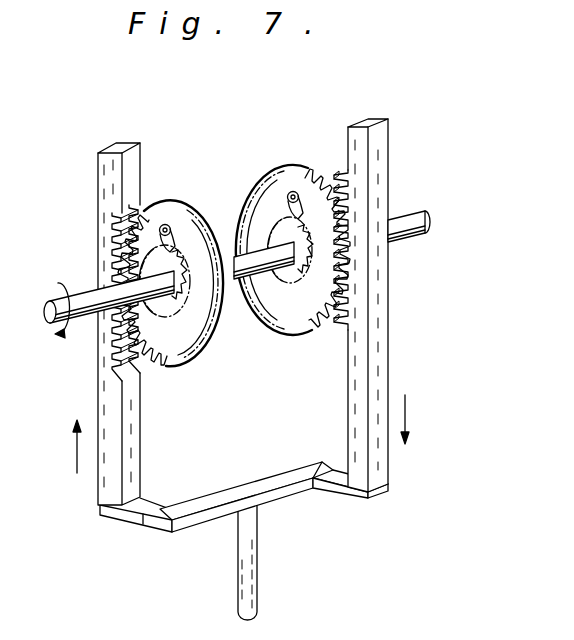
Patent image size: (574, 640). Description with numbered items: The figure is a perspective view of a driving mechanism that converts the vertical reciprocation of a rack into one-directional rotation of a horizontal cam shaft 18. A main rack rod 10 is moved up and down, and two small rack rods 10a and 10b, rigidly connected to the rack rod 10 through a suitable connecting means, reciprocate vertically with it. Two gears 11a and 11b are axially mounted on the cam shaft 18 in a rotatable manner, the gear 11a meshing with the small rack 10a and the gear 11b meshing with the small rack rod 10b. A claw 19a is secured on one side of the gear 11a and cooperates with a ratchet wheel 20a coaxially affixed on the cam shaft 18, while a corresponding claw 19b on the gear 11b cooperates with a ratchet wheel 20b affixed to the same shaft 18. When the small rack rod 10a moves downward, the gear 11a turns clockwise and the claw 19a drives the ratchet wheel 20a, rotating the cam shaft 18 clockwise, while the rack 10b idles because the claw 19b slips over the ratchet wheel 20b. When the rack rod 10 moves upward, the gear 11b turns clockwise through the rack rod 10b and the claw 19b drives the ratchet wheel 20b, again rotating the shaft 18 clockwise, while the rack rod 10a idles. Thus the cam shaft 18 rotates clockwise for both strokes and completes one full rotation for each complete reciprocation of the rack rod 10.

The rack rod 10 is at (258, 557).
The small rack rod 10a is at (375, 125).
The small rack rod 10b is at (121, 150).
The gear 11a is at (322, 322).
The gear 11b is at (211, 356).
The cam shaft 18 is at (261, 284).
The claw 19a is at (294, 191).
The claw 19b is at (169, 224).
The ratchet wheel 20a is at (296, 282).
The ratchet wheel 20b is at (173, 328).